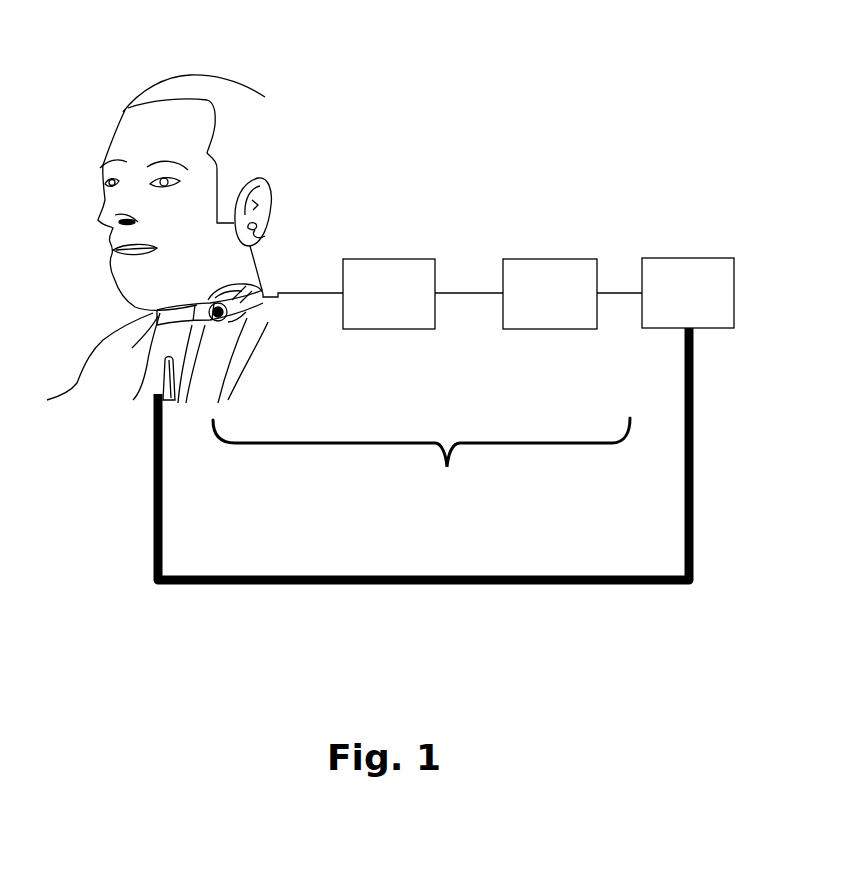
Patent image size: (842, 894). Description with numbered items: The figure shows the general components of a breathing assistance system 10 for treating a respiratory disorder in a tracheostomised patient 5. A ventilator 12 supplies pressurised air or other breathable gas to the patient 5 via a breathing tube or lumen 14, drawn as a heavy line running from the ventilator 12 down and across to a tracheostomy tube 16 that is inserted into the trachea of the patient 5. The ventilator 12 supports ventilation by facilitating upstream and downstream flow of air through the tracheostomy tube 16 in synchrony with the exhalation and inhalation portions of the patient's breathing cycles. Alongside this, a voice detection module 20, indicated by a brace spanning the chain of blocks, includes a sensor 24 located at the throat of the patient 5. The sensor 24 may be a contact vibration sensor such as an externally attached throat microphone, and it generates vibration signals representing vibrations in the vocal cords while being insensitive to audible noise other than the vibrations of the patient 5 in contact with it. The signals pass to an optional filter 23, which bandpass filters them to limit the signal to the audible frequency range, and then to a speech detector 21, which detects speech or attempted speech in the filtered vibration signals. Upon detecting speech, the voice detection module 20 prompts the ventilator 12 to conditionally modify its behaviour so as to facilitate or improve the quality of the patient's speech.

The tracheostomised patient 5 is at (159, 239).
The breathing assistance system 10 is at (390, 91).
The ventilator 12 is at (696, 258).
The breathing tube 14 is at (535, 585).
The tracheostomy tube 16 is at (167, 360).
The voice detection module 20 is at (421, 458).
The speech detector 21 is at (556, 259).
The filter 23 is at (392, 259).
The sensor 24 is at (217, 317).